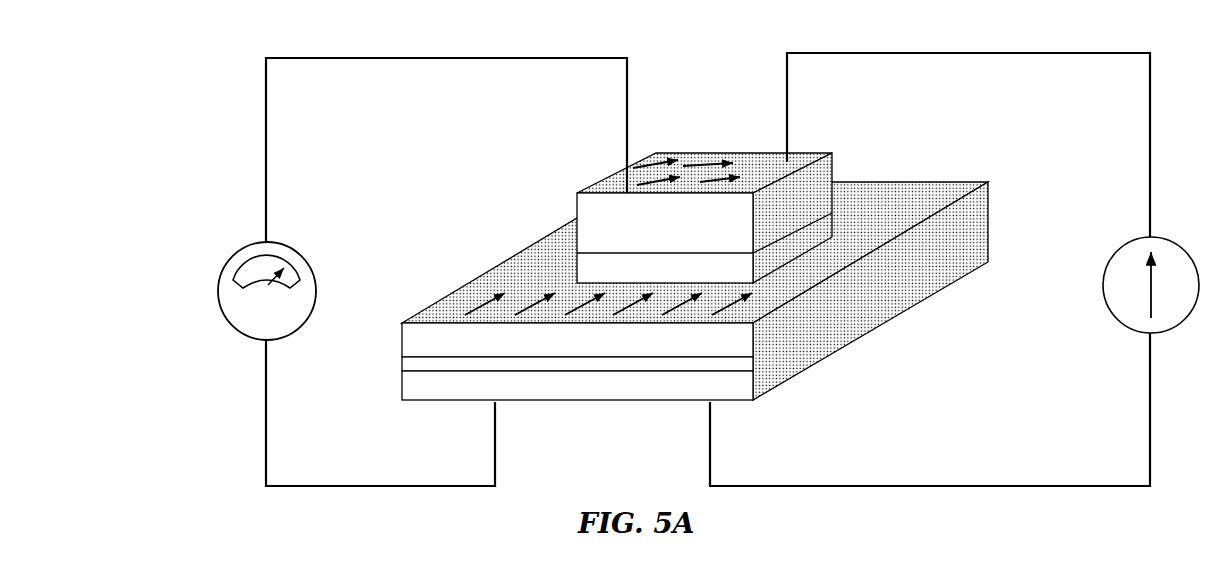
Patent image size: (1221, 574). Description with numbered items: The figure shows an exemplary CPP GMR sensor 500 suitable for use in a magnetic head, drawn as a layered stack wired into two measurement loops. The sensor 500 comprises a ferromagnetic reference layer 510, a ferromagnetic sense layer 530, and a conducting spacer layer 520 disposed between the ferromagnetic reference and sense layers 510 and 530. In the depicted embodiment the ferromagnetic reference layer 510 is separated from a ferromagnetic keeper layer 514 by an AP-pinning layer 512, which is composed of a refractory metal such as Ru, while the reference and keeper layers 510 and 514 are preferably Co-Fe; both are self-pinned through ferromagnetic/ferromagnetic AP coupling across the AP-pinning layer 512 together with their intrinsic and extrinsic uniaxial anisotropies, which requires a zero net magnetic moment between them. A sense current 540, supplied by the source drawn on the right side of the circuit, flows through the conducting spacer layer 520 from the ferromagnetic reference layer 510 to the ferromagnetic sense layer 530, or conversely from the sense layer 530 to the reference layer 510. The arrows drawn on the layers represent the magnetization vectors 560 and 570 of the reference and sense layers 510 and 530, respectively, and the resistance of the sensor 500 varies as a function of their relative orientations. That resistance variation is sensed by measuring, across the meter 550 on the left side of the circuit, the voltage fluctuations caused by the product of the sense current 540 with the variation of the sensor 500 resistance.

The CPP GMR sensor 500 is at (165, 447).
The ferromagnetic reference layer 510 is at (745, 333).
The AP-pinning layer 512 is at (729, 363).
The ferromagnetic keeper layer 514 is at (715, 398).
The conducting spacer layer 520 is at (823, 220).
The ferromagnetic sense layer 530 is at (802, 155).
The sense current 540 is at (1133, 335).
The meter 550 is at (292, 248).
The magnetization vector of the ferromagnetic reference layer 560 is at (484, 310).
The magnetization vector of the ferromagnetic sense layer 570 is at (655, 153).